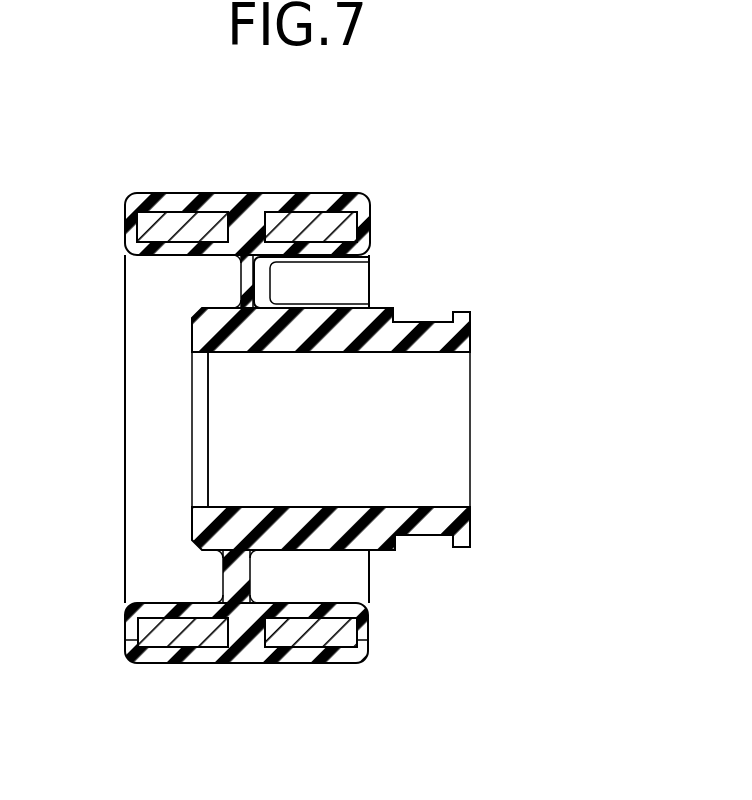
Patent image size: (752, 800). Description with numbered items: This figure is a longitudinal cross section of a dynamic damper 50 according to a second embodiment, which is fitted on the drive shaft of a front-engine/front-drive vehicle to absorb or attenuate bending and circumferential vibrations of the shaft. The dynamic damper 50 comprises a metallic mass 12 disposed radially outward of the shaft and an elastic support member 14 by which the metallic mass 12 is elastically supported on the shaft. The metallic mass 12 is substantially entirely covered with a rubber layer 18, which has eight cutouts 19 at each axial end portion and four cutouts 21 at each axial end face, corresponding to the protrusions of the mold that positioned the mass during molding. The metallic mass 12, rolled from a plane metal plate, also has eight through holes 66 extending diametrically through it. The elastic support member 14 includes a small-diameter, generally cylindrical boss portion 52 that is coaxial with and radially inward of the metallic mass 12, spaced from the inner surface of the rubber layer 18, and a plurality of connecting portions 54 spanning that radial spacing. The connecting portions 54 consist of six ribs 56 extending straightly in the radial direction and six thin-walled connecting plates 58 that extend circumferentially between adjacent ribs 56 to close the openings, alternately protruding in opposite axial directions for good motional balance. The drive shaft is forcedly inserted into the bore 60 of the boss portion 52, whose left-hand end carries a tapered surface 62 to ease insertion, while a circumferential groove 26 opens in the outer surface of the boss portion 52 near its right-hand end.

The dynamic damper 50 is at (513, 156).
The metallic mass 12 is at (170, 220).
The elastic support member 14 is at (445, 219).
The rubber layer 18 is at (264, 194).
The cutouts 19 is at (148, 658).
The cutouts 21 is at (130, 649).
The circumferential groove 26 is at (435, 320).
The boss portion 52 is at (307, 425).
The connecting portions 54 is at (262, 261).
The ribs 56 is at (247, 275).
The connecting plates 58 is at (268, 298).
The bore 60 is at (448, 351).
The tapered surface 62 is at (207, 343).
The through holes 66 is at (250, 197).